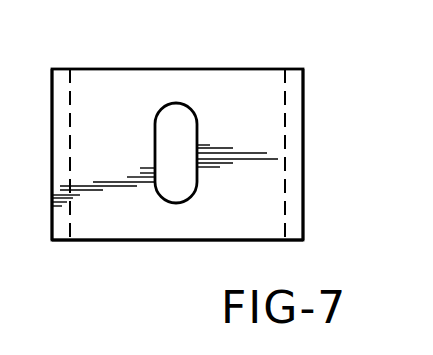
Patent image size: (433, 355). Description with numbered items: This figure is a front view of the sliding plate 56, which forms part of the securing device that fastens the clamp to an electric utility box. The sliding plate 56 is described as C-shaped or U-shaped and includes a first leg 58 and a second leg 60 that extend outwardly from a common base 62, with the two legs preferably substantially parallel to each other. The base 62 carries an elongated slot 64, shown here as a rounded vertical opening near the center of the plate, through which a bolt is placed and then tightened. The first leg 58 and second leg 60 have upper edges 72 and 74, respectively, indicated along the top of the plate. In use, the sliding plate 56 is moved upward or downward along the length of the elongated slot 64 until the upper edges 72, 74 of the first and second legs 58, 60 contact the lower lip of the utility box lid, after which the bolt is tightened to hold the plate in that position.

The sliding plate 56 is at (393, 89).
The first leg 58 is at (52, 173).
The second leg 60 is at (304, 161).
The base 62 is at (250, 228).
The elongated slot 64 is at (175, 103).
The upper edge 72 is at (63, 69).
The upper edge 74 is at (292, 69).